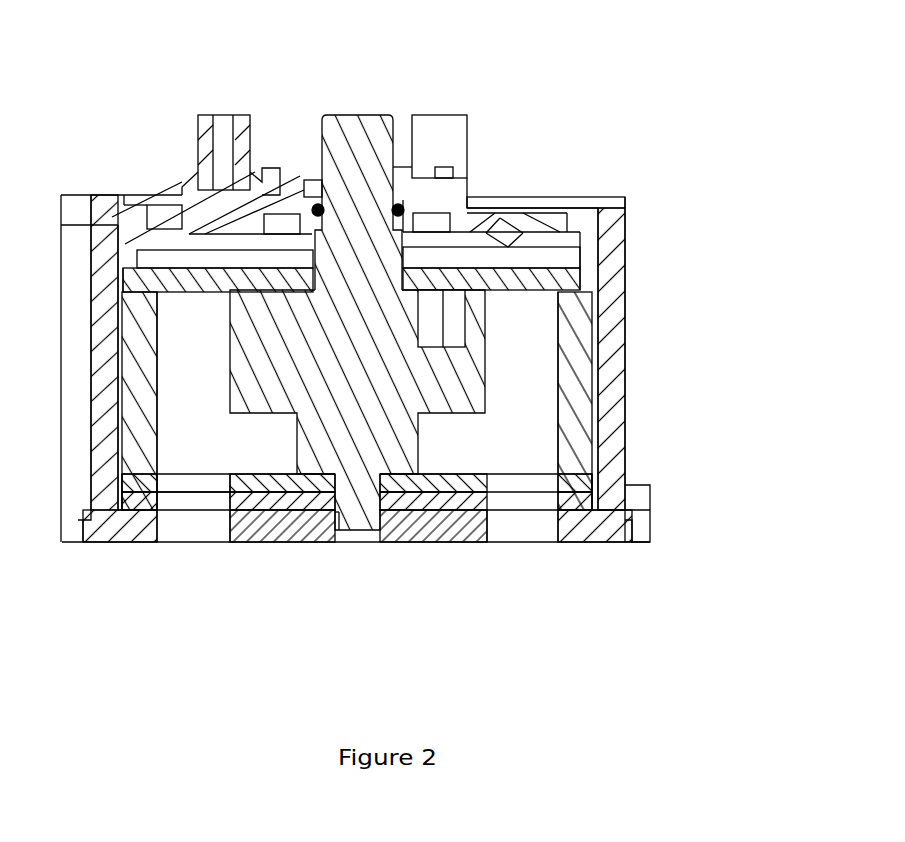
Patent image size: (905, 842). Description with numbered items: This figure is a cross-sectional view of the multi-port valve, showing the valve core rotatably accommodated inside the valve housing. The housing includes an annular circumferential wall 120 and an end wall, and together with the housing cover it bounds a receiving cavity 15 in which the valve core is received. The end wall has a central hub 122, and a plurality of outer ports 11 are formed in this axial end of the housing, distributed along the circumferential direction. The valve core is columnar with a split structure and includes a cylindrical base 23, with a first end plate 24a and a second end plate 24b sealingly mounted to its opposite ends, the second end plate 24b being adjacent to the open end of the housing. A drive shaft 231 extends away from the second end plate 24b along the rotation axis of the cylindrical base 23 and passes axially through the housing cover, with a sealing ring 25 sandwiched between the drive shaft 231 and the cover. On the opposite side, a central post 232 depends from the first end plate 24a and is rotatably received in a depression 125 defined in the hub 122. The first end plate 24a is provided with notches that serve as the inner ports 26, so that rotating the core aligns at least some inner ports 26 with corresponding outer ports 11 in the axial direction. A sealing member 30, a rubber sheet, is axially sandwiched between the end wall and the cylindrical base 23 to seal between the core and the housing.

The drive shaft 231 is at (369, 119).
The central post 232 is at (360, 513).
The depression 125 is at (337, 534).
The sealing ring 25 is at (407, 200).
The second end plate 24b is at (585, 272).
The first end plate 24a is at (592, 480).
The inner ports 26 is at (205, 476).
The cylindrical base 23 is at (584, 322).
The receiving cavity 15 is at (605, 362).
The circumferential wall 120 is at (623, 420).
The sealing member 30 is at (612, 507).
The outer ports 11 is at (208, 525).
The central hub 122 is at (443, 528).